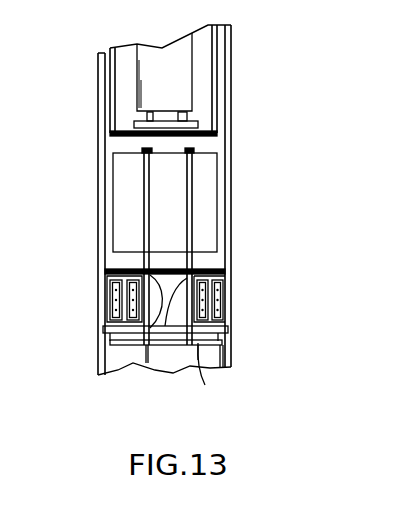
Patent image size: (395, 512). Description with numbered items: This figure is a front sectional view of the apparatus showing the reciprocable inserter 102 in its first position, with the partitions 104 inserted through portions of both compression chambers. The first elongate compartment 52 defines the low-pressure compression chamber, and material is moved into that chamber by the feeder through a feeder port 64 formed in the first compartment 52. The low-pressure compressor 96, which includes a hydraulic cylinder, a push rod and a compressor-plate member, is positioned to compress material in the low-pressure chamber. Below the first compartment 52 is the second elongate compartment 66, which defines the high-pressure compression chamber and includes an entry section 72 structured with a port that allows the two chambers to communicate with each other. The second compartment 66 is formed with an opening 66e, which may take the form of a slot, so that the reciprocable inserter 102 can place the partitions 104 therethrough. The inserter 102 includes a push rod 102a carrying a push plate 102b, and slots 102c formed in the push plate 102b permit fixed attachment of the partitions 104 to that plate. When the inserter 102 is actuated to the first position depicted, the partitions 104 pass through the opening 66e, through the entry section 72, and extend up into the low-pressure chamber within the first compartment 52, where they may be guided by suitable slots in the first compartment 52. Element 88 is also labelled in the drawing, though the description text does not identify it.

The first elongate compartment 52 is at (231, 178).
The feeder port 64 is at (206, 207).
The second elongate compartment 66 is at (210, 290).
The opening 66e is at (252, 302).
The entry section 72 is at (173, 288).
The bearing plate 88 is at (113, 339).
The low-pressure compressor 96 is at (203, 95).
The reciprocable inserter 102 is at (233, 368).
The push rod 102a is at (153, 363).
The push plate 102b is at (128, 345).
The slots 102c is at (150, 345).
The partitions 104 is at (187, 199).